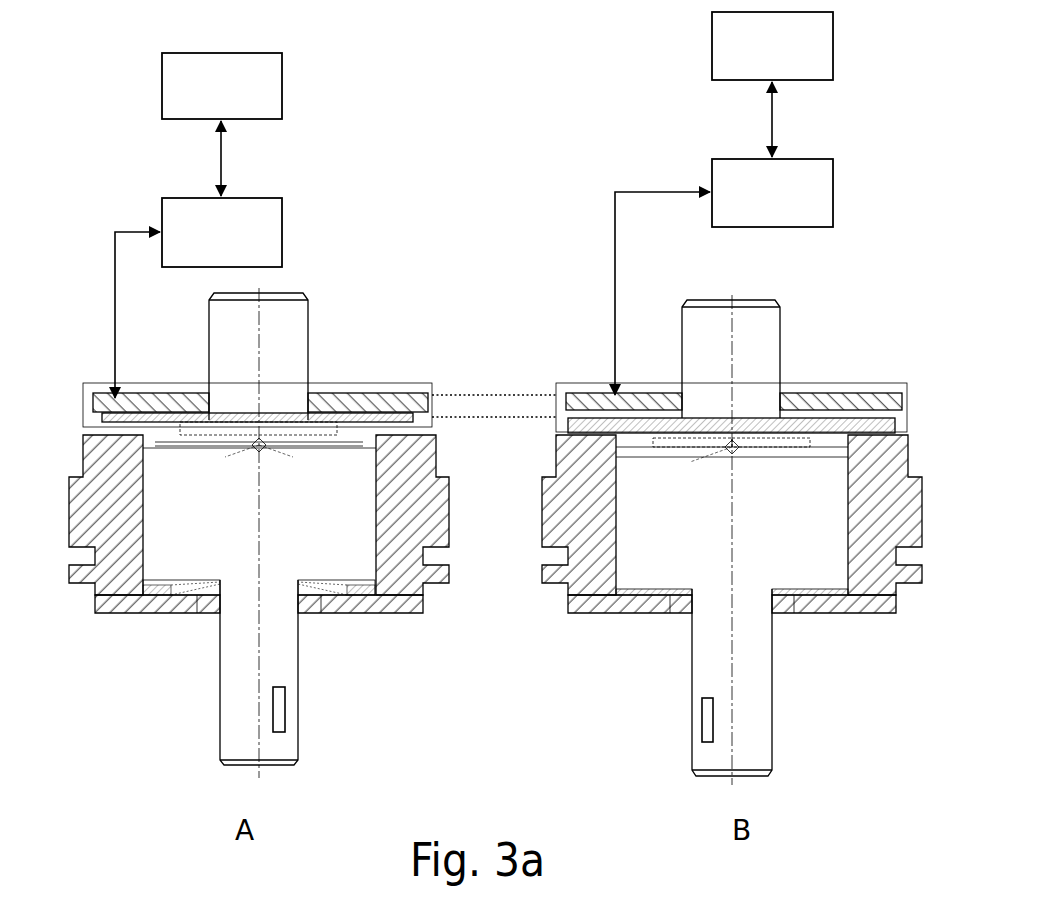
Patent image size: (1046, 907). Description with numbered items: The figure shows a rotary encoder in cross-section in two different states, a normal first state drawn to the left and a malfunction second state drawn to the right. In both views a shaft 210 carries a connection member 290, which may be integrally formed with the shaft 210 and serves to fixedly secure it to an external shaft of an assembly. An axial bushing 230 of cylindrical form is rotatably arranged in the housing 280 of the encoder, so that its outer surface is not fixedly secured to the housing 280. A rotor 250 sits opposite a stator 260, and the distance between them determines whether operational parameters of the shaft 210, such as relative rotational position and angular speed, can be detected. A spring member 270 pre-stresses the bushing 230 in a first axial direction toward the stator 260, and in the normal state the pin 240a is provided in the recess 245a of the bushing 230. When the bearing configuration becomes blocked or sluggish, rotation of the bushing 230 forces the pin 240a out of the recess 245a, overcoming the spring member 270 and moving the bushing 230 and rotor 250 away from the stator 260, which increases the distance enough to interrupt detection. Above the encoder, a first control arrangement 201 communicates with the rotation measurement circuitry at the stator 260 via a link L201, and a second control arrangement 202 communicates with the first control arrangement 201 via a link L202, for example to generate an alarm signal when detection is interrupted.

The first control arrangement 201 is at (497, 213).
The second control arrangement 202 is at (497, 65).
The link L201 is at (122, 230).
The link L202 is at (223, 143).
The shaft 210 is at (238, 698).
The axial bushing 230 is at (160, 480).
The pin 240a is at (263, 444).
The recess 245a is at (258, 442).
The rotor 250 is at (107, 413).
The stator 260 is at (410, 393).
The spring member 270 is at (188, 587).
The housing 280 is at (393, 600).
The connection member 290 is at (287, 723).